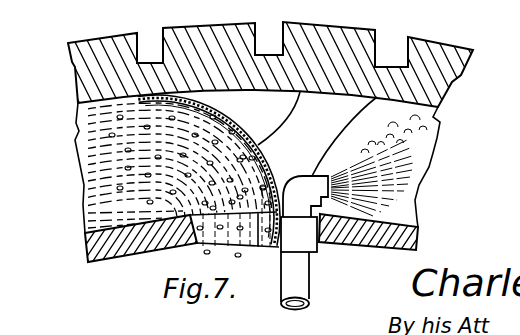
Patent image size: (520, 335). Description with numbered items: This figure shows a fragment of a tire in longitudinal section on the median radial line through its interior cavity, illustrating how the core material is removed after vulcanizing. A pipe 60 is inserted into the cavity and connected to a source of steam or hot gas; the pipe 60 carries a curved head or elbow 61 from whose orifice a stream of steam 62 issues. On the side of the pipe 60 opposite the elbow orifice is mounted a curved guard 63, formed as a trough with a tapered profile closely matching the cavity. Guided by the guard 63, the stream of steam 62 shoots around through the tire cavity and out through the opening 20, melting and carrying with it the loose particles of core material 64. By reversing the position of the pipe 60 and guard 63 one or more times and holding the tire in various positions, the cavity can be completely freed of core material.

The opening 20 is at (195, 243).
The pipe 60 is at (309, 286).
The curved head or elbow 61 is at (377, 97).
The stream of steam 62 is at (410, 156).
The curved guard 63 is at (300, 92).
The loose particles of core material 64 is at (117, 197).